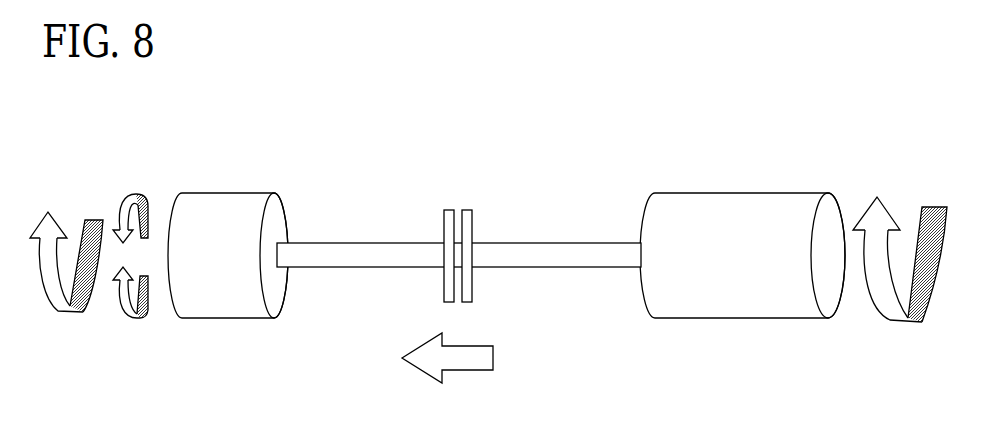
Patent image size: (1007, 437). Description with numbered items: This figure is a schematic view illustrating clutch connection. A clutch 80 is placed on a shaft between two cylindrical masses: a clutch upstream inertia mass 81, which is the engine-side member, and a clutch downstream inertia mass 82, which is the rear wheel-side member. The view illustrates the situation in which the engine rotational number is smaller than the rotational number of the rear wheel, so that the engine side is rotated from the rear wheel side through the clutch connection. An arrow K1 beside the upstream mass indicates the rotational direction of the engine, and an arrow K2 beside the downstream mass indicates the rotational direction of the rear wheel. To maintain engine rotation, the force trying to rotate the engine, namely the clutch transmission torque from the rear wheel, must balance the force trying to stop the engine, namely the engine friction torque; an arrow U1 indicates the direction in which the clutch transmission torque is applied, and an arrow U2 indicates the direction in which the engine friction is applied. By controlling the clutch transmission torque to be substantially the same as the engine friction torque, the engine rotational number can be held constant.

The clutch 80 is at (462, 206).
The clutch upstream inertia mass 81 is at (222, 193).
The clutch downstream inertia mass 82 is at (718, 193).
The arrow indicating rotational direction of the engine K1 is at (70, 313).
The arrow indicating rotational direction of the rear wheel K2 is at (900, 323).
The arrow indicating direction of clutch transmission torque U1 is at (132, 320).
The arrow indicating direction of engine friction U2 is at (132, 192).